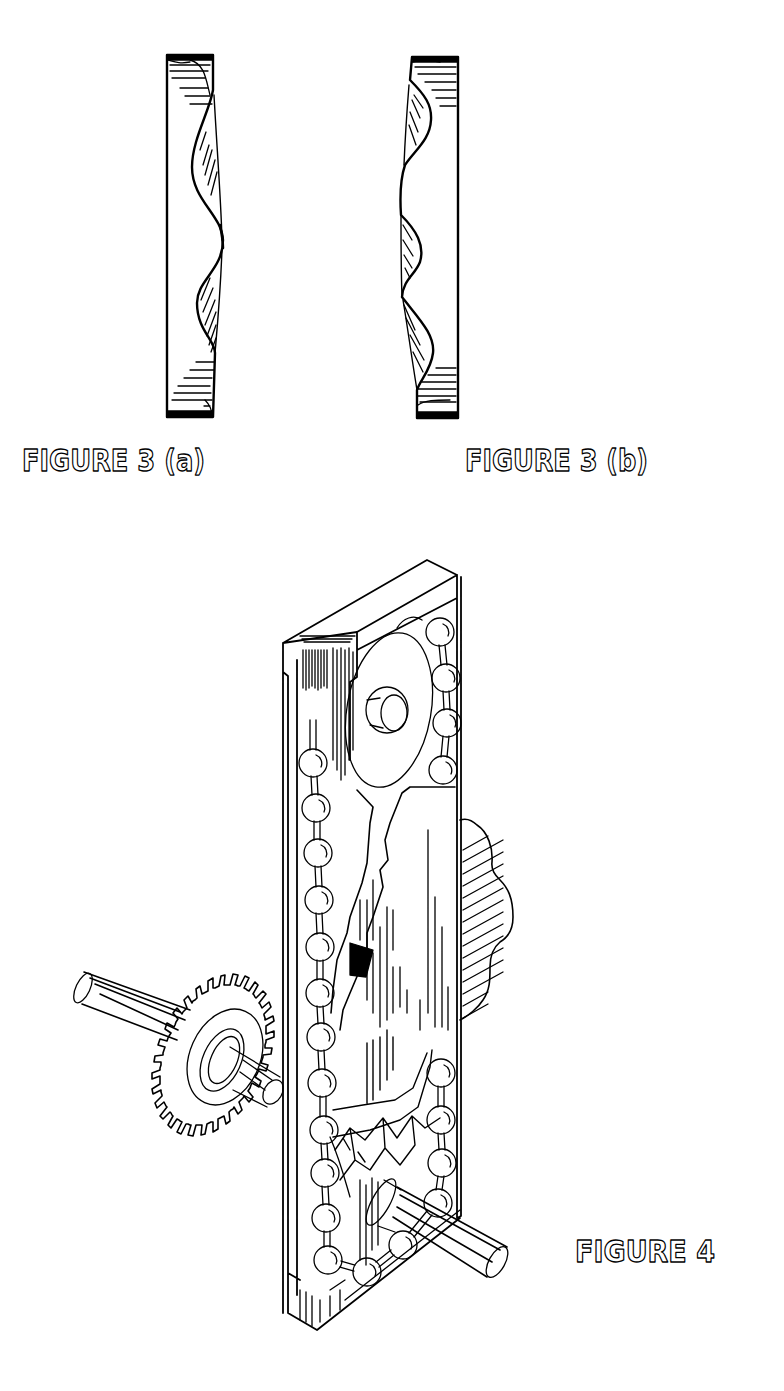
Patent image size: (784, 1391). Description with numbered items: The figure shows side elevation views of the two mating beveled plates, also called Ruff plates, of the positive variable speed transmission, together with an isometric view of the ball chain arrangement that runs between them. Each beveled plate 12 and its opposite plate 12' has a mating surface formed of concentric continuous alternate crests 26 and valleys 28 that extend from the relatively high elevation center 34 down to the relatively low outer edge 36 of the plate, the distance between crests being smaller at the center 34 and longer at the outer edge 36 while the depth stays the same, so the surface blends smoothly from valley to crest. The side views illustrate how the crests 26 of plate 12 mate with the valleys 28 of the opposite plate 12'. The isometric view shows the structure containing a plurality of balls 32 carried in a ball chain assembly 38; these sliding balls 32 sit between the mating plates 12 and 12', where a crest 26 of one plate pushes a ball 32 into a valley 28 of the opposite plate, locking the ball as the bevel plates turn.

In FIG. 3A, the beveled plate 12 is at (150, 236).
In FIG. 4, the beveled plate 12 is at (461, 1026).
In FIG. 3B, the beveled plate 12' is at (477, 237).
In FIG. 3A, the crest 26 is at (222, 236).
In FIG. 3B, the crest 26 is at (400, 300).
In FIG. 3A, the valley 28 is at (215, 205).
In FIG. 3B, the valley 28 is at (409, 355).
In FIG. 3A, the center 34 is at (221, 232).
In FIG. 3B, the center 34 is at (405, 243).
In FIG. 3A, the outer edge 36 is at (208, 55).
In FIG. 3B, the outer edge 36 is at (412, 57).
In FIG. 4, the ball chain assembly 38 is at (305, 640).
In FIG. 4, the ball 32 is at (300, 775).